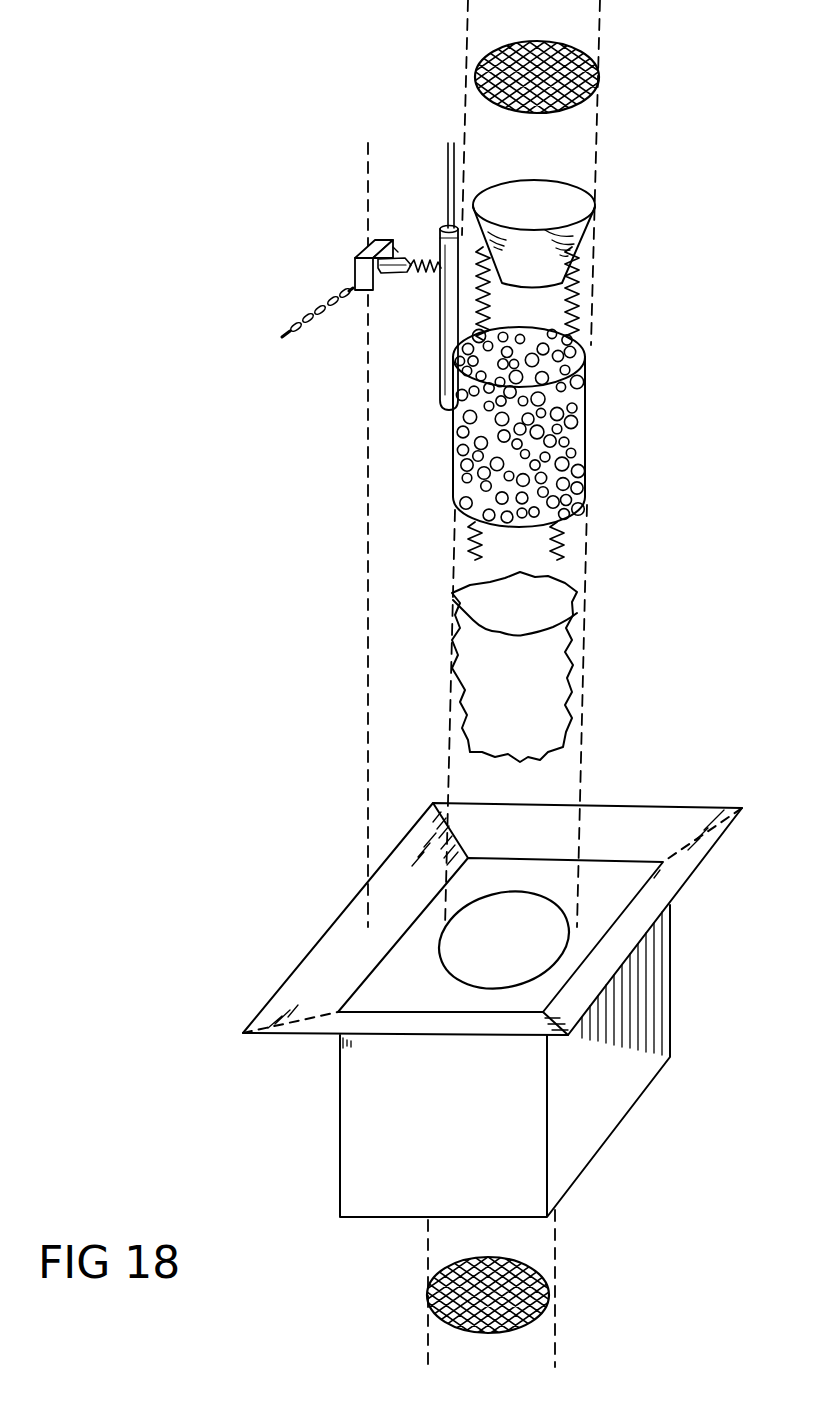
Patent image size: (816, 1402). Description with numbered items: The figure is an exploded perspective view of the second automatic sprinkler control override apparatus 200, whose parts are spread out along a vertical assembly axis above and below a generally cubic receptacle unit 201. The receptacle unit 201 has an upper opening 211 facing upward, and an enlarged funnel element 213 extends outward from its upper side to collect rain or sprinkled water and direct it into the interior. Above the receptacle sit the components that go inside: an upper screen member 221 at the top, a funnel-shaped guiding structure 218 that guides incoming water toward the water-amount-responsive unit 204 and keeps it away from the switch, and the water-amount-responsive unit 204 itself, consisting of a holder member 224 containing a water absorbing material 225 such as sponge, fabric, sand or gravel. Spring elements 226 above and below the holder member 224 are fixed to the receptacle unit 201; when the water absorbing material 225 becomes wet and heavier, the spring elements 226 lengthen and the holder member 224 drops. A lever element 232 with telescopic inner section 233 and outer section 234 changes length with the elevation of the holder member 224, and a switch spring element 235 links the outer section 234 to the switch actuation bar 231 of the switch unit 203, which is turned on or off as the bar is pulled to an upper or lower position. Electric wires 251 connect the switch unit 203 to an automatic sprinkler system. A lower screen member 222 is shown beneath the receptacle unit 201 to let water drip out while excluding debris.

The automatic sprinkler control override apparatus 200 is at (188, 809).
The receptacle unit 201 is at (340, 1152).
The switch unit 203 is at (357, 263).
The water-amount-responsive unit 204 is at (570, 427).
The upper opening 211 is at (555, 947).
The funnel element 213 is at (683, 868).
The guiding structure 218 is at (577, 210).
The upper screen member 221 is at (580, 86).
The lower screen member 222 is at (552, 1300).
The holder member 224 is at (578, 457).
The water absorbing material 225 is at (565, 662).
The spring elements 226 is at (583, 308).
The switch actuation bar 231 is at (402, 255).
The lever element 232 is at (438, 383).
The inner section 233 is at (447, 170).
The outer section 234 is at (438, 333).
The switch spring element 235 is at (410, 282).
The electric wires 251 is at (318, 302).